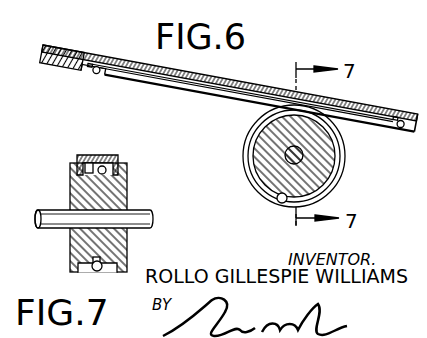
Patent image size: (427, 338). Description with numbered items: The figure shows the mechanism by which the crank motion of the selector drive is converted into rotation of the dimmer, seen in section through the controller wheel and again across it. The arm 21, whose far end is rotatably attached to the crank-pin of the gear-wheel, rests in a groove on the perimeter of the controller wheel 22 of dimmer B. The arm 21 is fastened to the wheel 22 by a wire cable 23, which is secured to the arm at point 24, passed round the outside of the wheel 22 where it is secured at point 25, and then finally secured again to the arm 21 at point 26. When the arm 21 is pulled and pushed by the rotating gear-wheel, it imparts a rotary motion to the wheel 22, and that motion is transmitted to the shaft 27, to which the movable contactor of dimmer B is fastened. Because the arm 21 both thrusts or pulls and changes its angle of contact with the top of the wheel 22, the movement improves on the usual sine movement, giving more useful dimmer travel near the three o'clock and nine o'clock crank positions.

In FIG. 6, the arm 21 is at (77, 46).
In FIG. 7, the arm 21 is at (78, 157).
In FIG. 6, the controller wheel 22 is at (344, 173).
In FIG. 7, the controller wheel 22 is at (70, 186).
In FIG. 6, the wire cable 23 is at (216, 96).
In FIG. 6, the securing point 24 is at (98, 73).
In FIG. 6, the securing point 25 is at (277, 200).
In FIG. 6, the securing point 26 is at (409, 133).
In FIG. 6, the shaft 27 is at (285, 153).
In FIG. 7, the shaft 27 is at (49, 229).